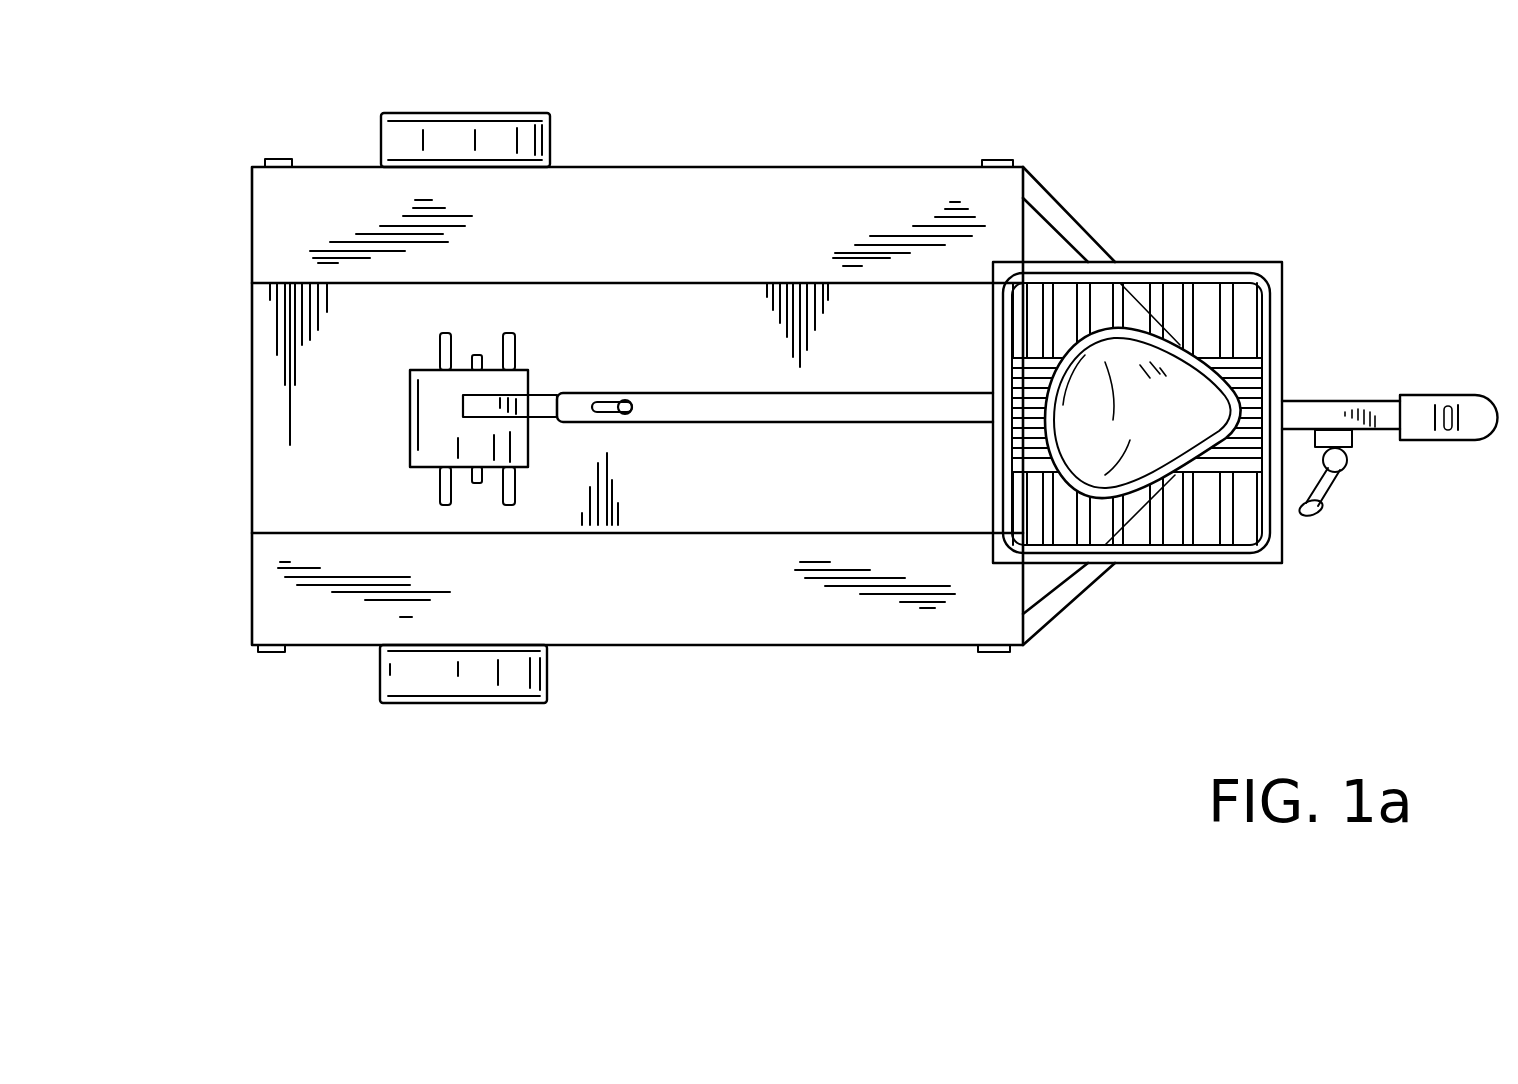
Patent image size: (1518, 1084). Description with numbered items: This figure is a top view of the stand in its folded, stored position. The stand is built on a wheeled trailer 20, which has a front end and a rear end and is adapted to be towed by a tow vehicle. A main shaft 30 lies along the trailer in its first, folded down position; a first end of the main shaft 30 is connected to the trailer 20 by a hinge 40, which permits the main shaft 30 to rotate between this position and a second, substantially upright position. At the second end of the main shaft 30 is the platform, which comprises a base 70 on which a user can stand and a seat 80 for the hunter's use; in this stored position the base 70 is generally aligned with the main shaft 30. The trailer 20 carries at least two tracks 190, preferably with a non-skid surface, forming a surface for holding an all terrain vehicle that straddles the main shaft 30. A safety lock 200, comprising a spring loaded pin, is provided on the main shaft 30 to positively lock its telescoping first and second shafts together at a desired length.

The wheeled trailer 20 is at (240, 512).
The tracks 190 is at (646, 182).
The main shaft 30 is at (838, 413).
The safety lock 200 is at (617, 420).
The hinge 40 is at (497, 388).
The base 70 is at (1277, 563).
The seat 80 is at (1218, 427).